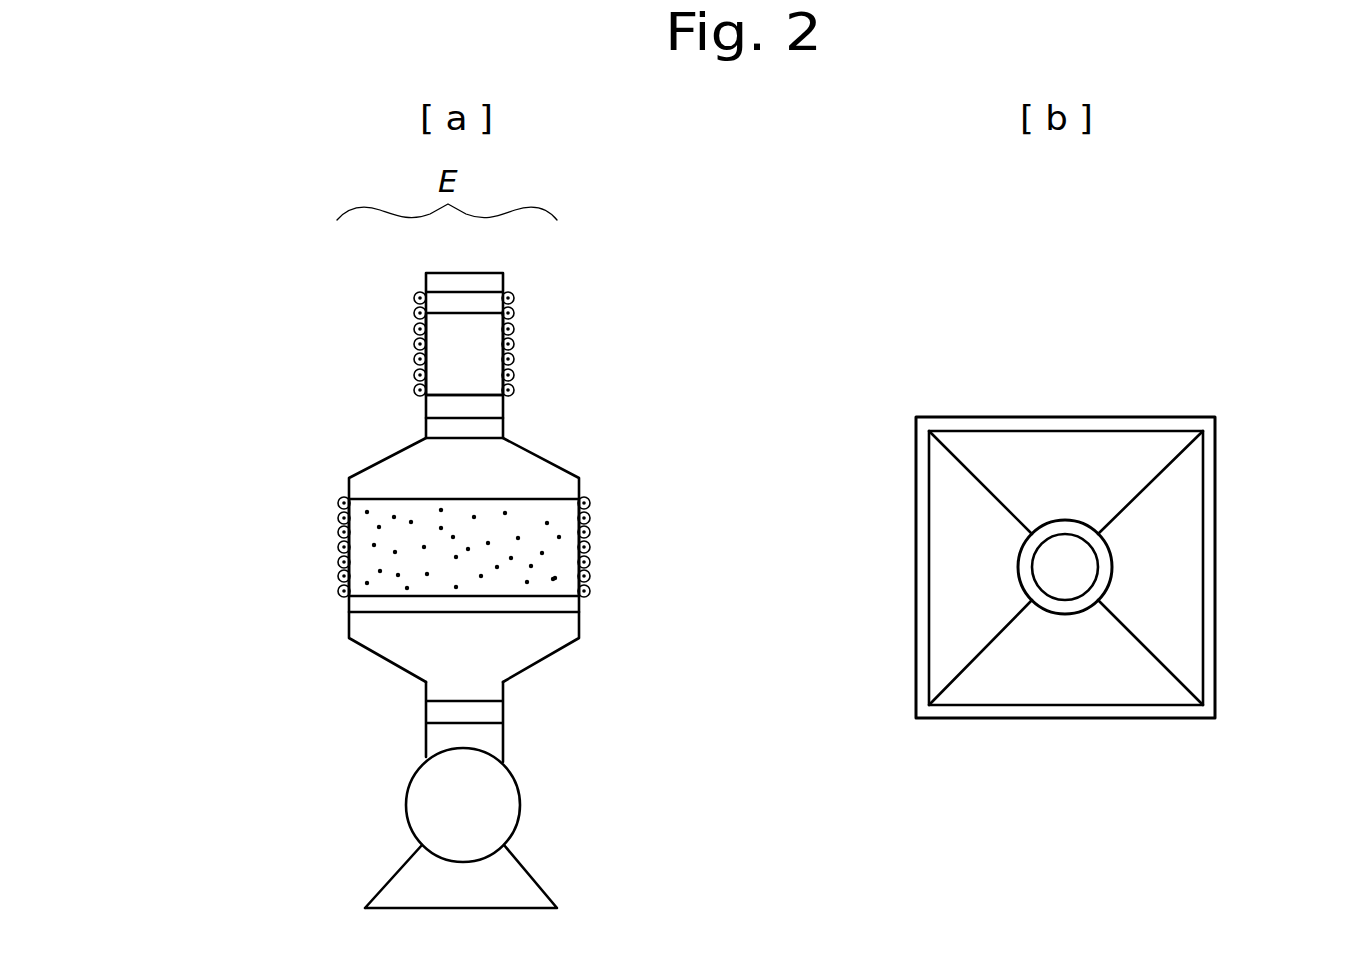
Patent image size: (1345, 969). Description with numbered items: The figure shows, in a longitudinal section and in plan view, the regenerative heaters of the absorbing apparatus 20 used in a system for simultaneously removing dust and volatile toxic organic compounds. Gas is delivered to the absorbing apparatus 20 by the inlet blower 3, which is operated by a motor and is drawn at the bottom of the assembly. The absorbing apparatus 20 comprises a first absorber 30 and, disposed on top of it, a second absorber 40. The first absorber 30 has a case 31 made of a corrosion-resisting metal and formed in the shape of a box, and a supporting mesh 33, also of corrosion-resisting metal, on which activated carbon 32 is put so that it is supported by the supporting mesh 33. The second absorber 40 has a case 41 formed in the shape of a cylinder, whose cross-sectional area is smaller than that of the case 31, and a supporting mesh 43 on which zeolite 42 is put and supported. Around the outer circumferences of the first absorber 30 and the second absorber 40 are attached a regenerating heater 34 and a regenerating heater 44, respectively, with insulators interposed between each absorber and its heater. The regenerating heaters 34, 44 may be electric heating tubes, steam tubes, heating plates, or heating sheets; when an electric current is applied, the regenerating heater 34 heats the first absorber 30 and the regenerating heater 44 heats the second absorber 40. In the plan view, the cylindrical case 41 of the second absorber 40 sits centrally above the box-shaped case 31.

In FIG. 2a, the inlet blower 3 is at (430, 807).
In FIG. 2a, the absorbing apparatus 20 is at (208, 288).
In FIG. 2a, the first absorber 30 is at (322, 527).
In FIG. 2b, the first absorber 30 is at (1157, 414).
In FIG. 2a, the case 31 is at (558, 475).
In FIG. 2b, the case 31 is at (1040, 436).
In FIG. 2a, the activated carbon 32 is at (393, 583).
In FIG. 2b, the activated carbon 32 is at (1125, 641).
In FIG. 2a, the supporting mesh 33 is at (522, 605).
In FIG. 2a, the regenerating heater 34 is at (607, 497).
In FIG. 2b, the regenerating heater 34 is at (1207, 470).
In FIG. 2a, the second absorber 40 is at (396, 346).
In FIG. 2b, the second absorber 40 is at (1014, 586).
In FIG. 2a, the case 41 is at (505, 289).
In FIG. 2b, the case 41 is at (1048, 596).
In FIG. 2a, the zeolite 42 is at (445, 356).
In FIG. 2b, the zeolite 42 is at (1057, 557).
In FIG. 2a, the supporting mesh 43 is at (493, 407).
In FIG. 2a, the regenerating heater 44 is at (535, 290).
In FIG. 2b, the regenerating heater 44 is at (1110, 567).